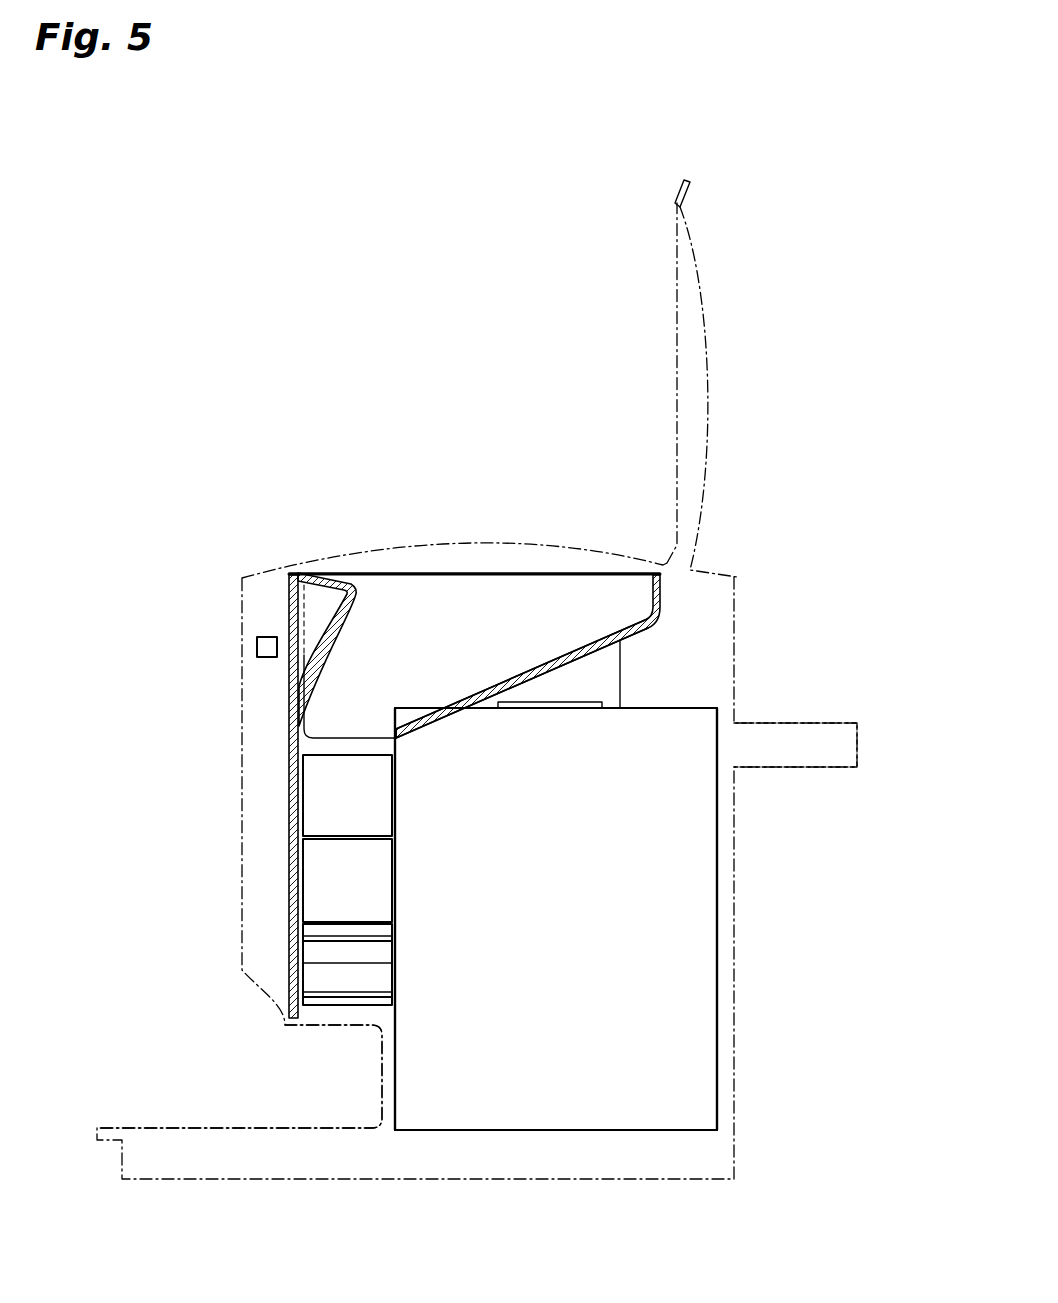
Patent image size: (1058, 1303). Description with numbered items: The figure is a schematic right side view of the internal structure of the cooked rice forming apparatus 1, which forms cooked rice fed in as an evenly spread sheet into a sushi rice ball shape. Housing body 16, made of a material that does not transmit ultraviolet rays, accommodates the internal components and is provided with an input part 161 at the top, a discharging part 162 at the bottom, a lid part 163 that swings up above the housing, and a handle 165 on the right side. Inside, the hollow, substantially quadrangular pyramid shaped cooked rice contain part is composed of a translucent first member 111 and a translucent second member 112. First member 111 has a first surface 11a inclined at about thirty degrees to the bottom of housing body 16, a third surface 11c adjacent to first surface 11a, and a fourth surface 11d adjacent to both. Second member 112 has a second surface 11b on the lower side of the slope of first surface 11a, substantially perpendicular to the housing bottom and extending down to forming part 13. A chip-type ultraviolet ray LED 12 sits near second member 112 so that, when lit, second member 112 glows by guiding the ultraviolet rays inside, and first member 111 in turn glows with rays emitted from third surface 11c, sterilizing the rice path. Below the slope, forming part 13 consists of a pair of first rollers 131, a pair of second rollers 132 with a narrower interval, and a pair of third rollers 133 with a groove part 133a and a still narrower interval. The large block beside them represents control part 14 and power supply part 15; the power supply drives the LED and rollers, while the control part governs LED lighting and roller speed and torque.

The cooked rice forming apparatus 1 is at (487, 220).
The first surface 11a is at (572, 647).
The second surface 11b is at (292, 742).
The third surface 11c is at (525, 587).
The fourth surface 11d is at (643, 595).
The first member 111 is at (372, 573).
The second member 112 is at (290, 612).
The ultraviolet ray LED 12 is at (258, 638).
The forming part 13 is at (236, 934).
The first roller 131 is at (310, 807).
The second roller 132 is at (310, 874).
The third roller 133 is at (317, 982).
The groove part 133a is at (310, 950).
The control part 14 is at (688, 898).
The power supply part 15 is at (556, 919).
The housing body 16 is at (735, 630).
The input part 161 is at (467, 552).
The discharging part 162 is at (335, 1020).
The lid part 163 is at (698, 423).
The handle 165 is at (810, 753).